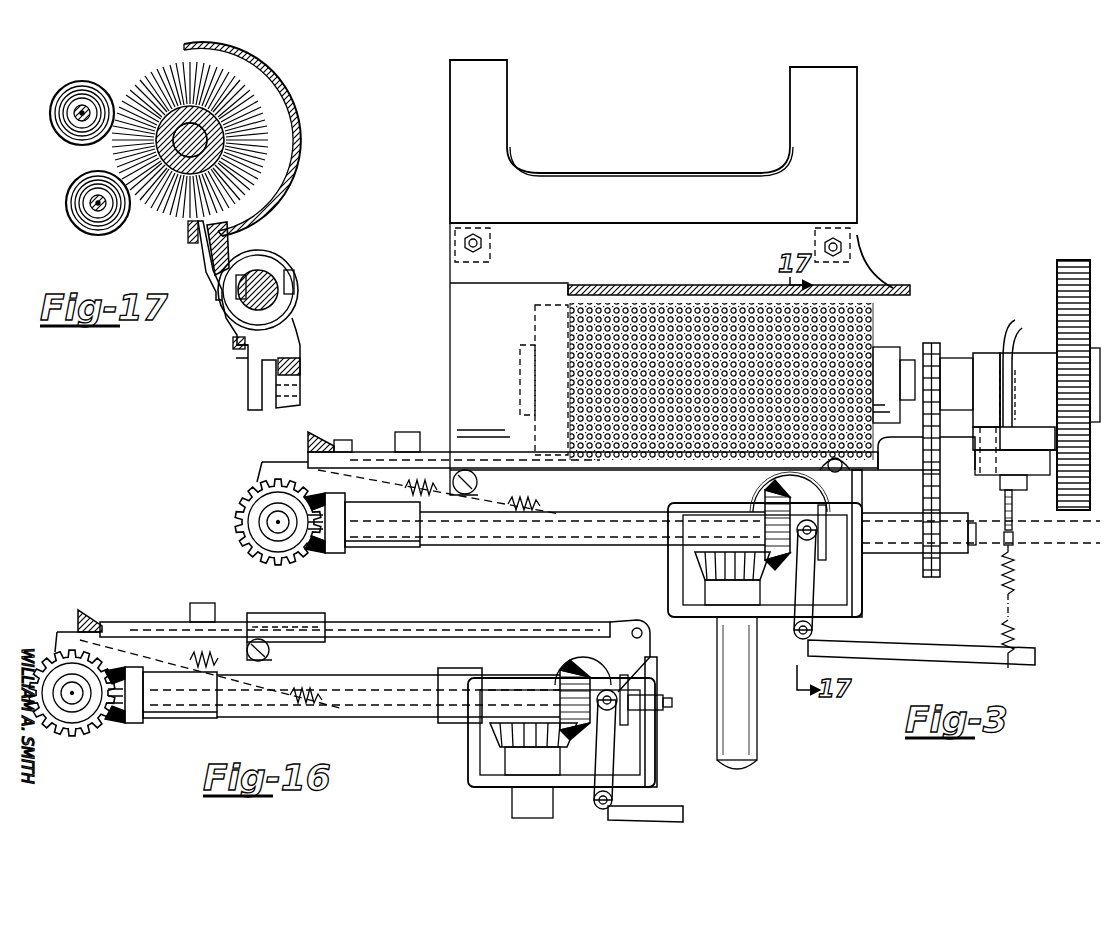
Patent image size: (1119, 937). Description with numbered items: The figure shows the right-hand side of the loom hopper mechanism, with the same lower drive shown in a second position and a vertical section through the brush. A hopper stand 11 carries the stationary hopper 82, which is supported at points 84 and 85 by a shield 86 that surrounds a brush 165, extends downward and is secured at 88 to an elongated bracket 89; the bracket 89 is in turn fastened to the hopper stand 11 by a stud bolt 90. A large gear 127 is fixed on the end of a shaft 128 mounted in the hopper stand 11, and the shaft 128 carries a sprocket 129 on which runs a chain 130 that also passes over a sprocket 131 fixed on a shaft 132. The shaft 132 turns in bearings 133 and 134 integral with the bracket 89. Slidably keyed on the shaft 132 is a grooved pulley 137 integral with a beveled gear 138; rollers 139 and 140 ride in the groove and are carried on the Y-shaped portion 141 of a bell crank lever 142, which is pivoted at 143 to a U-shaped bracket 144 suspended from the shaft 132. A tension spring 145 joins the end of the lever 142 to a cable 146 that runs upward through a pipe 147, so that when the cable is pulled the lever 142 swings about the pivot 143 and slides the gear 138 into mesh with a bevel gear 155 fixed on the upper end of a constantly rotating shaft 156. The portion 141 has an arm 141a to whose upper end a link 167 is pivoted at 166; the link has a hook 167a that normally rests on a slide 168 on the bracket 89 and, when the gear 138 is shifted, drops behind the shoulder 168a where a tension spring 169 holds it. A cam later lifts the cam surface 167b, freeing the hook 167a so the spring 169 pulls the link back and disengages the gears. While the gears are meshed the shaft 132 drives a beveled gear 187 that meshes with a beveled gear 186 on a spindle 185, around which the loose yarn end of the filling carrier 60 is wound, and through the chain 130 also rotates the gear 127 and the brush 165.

In FIG. 3, the hopper stand 11 is at (1015, 421).
In FIG. 17, the filling carrier 60 is at (76, 180).
In FIG. 3, the stationary hopper 82 is at (652, 170).
In FIG. 3, the support point 84 is at (482, 243).
In FIG. 3, the support point 85 is at (843, 247).
In FIG. 17, the shield 86 is at (250, 56).
In FIG. 3, the shield 86 is at (680, 352).
In FIG. 16, the shield 86 is at (290, 616).
In FIG. 3, the securing point 88 is at (478, 484).
In FIG. 16, the securing point 88 is at (270, 653).
In FIG. 17, the elongated bracket 89 is at (229, 240).
In FIG. 16, the elongated bracket 89 is at (427, 684).
In FIG. 3, the stud bolt 90 is at (1025, 510).
In FIG. 3, the gear 127 is at (1062, 262).
In FIG. 3, the shaft 128 is at (985, 360).
In FIG. 3, the sprocket 129 is at (952, 356).
In FIG. 3, the chain 130 is at (926, 454).
In FIG. 3, the sprocket 131 is at (942, 562).
In FIG. 17, the shaft 132 is at (270, 270).
In FIG. 3, the shaft 132 is at (977, 532).
In FIG. 16, the shaft 132 is at (665, 700).
In FIG. 3, the bearing 133 is at (360, 548).
In FIG. 16, the bearing 133 is at (176, 720).
In FIG. 3, the bearing 134 is at (870, 554).
In FIG. 17, the grooved pulley 137 is at (258, 290).
In FIG. 3, the grooved pulley 137 is at (822, 560).
In FIG. 16, the grooved pulley 137 is at (630, 684).
In FIG. 3, the beveled gear 138 is at (764, 504).
In FIG. 16, the beveled gear 138 is at (559, 680).
In FIG. 17, the roller 139 is at (236, 296).
In FIG. 17, the roller 140 is at (290, 268).
In FIG. 3, the roller 140 is at (841, 532).
In FIG. 16, the roller 140 is at (626, 726).
In FIG. 17, the Y-shaped portion 141 is at (298, 306).
In FIG. 3, the Y-shaped portion 141 is at (800, 572).
In FIG. 16, the Y-shaped portion 141 is at (600, 744).
In FIG. 17, the arm 141a is at (212, 282).
In FIG. 3, the arm 141a is at (860, 500).
In FIG. 16, the arm 141a is at (652, 658).
In FIG. 17, the bell crank lever 142 is at (276, 408).
In FIG. 3, the bell crank lever 142 is at (905, 646).
In FIG. 16, the bell crank lever 142 is at (684, 808).
In FIG. 17, the pivot 143 is at (300, 376).
In FIG. 3, the pivot 143 is at (796, 640).
In FIG. 16, the pivot 143 is at (597, 808).
In FIG. 17, the U-shaped bracket 144 is at (300, 342).
In FIG. 3, the U-shaped bracket 144 is at (668, 576).
In FIG. 16, the U-shaped bracket 144 is at (468, 771).
In FIG. 3, the tension spring 145 is at (1014, 574).
In FIG. 3, the cable 146 is at (1014, 538).
In FIG. 3, the pipe 147 is at (1012, 332).
In FIG. 3, the bevel gear 155 is at (698, 570).
In FIG. 16, the bevel gear 155 is at (492, 735).
In FIG. 3, the shaft 156 is at (752, 756).
In FIG. 16, the shaft 156 is at (532, 802).
In FIG. 17, the brush 165 is at (165, 90).
In FIG. 3, the brush 165 is at (720, 302).
In FIG. 17, the pivot 166 is at (187, 236).
In FIG. 3, the pivot 166 is at (850, 472).
In FIG. 16, the pivot 166 is at (636, 627).
In FIG. 17, the link 167 is at (200, 256).
In FIG. 3, the link 167 is at (444, 452).
In FIG. 16, the link 167 is at (428, 623).
In FIG. 3, the hook 167a is at (312, 440).
In FIG. 16, the hook 167a is at (88, 612).
In FIG. 3, the cam surface 167b is at (332, 436).
In FIG. 16, the cam surface 167b is at (106, 612).
In FIG. 3, the slide 168 is at (368, 440).
In FIG. 16, the slide 168 is at (165, 622).
In FIG. 3, the shoulder 168a is at (306, 458).
In FIG. 16, the shoulder 168a is at (104, 622).
In FIG. 3, the tension spring 169 is at (530, 480).
In FIG. 16, the tension spring 169 is at (336, 660).
In FIG. 3, the spindle 185 is at (275, 522).
In FIG. 16, the spindle 185 is at (70, 700).
In FIG. 3, the beveled gear 186 is at (254, 494).
In FIG. 16, the beveled gear 186 is at (55, 662).
In FIG. 3, the beveled gear 187 is at (326, 562).
In FIG. 16, the beveled gear 187 is at (126, 728).